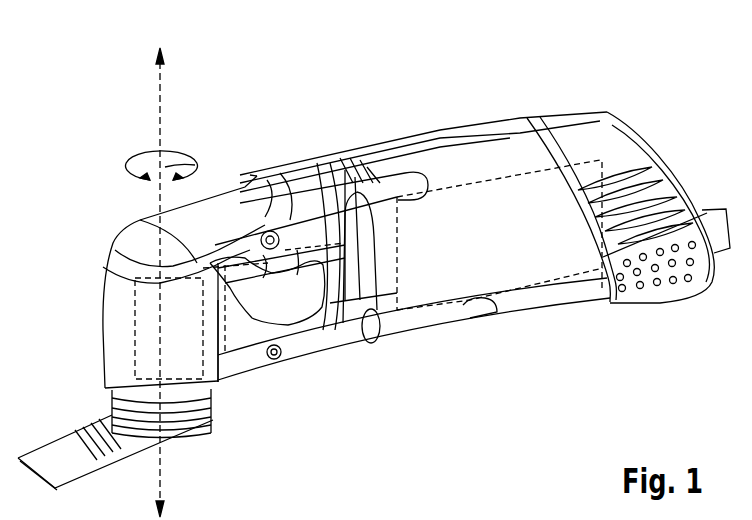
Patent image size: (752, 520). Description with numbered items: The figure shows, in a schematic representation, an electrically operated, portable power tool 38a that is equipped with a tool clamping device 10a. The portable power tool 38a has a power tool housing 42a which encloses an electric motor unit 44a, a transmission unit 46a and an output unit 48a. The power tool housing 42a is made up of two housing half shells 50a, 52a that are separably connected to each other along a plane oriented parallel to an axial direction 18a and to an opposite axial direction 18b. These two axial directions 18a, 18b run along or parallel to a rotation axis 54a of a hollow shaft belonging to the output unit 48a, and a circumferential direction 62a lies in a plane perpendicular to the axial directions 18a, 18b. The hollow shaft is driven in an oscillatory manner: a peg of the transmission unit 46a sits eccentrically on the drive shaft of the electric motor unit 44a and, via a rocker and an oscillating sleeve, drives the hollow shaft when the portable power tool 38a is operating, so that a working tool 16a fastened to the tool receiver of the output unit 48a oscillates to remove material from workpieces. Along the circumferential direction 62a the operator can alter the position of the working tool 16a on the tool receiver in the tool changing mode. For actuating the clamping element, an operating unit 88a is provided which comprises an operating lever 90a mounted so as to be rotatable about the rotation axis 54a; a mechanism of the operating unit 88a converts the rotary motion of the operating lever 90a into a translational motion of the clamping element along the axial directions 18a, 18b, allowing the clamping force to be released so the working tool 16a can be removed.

The tool clamping device 10a is at (212, 430).
The working tool 16a is at (56, 453).
The axial direction 18a is at (157, 89).
The axial direction 18b is at (159, 488).
The portable power tool 38a is at (622, 77).
The power tool housing 42a is at (551, 126).
The electric motor unit 44a is at (485, 308).
The transmission unit 46a is at (370, 345).
The output unit 48a is at (213, 360).
The housing half shell 50a is at (430, 147).
The housing half shell 52a is at (627, 143).
The rotation axis 54a is at (158, 140).
The circumferential direction 62a is at (178, 150).
The operating unit 88a is at (110, 234).
The operating lever 90a is at (294, 297).